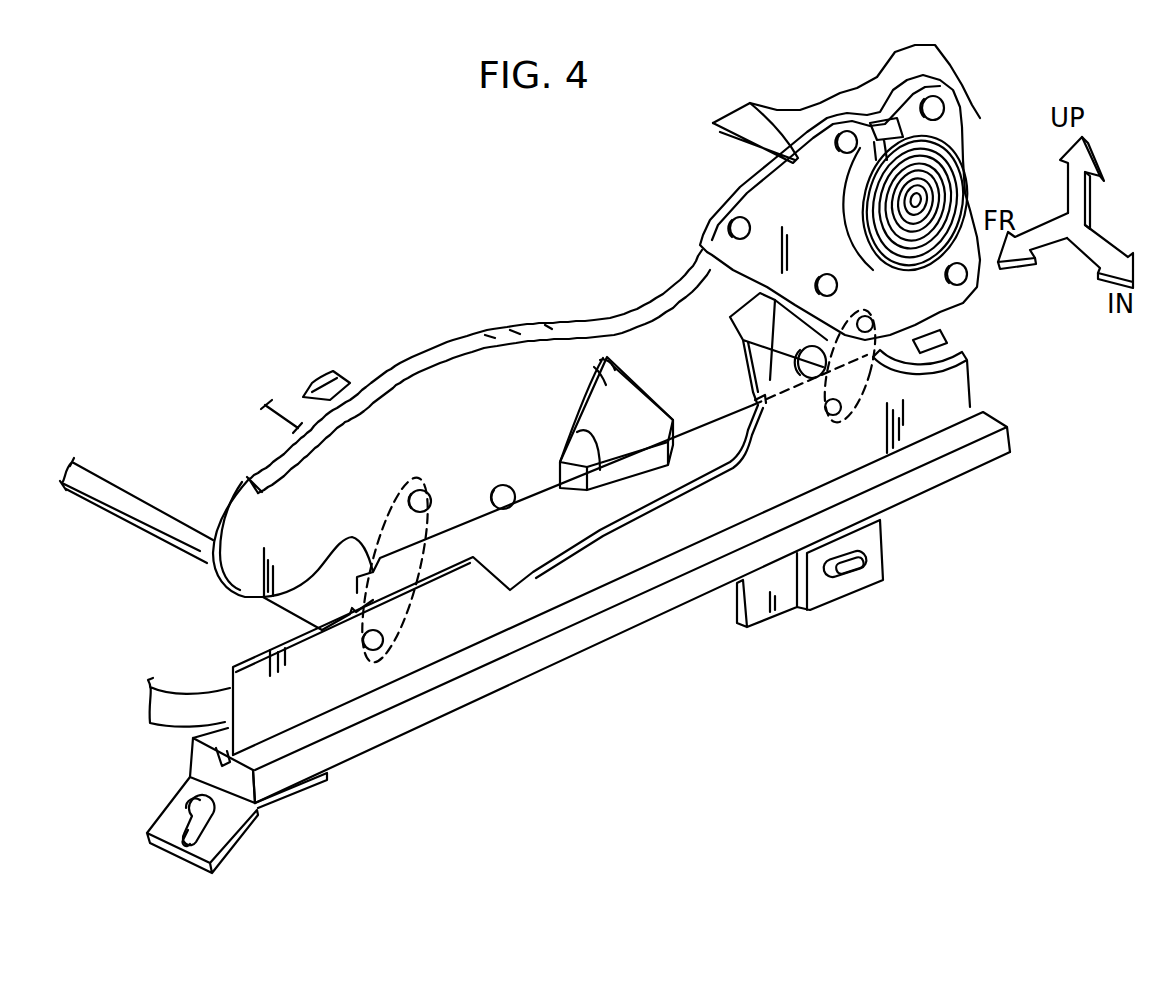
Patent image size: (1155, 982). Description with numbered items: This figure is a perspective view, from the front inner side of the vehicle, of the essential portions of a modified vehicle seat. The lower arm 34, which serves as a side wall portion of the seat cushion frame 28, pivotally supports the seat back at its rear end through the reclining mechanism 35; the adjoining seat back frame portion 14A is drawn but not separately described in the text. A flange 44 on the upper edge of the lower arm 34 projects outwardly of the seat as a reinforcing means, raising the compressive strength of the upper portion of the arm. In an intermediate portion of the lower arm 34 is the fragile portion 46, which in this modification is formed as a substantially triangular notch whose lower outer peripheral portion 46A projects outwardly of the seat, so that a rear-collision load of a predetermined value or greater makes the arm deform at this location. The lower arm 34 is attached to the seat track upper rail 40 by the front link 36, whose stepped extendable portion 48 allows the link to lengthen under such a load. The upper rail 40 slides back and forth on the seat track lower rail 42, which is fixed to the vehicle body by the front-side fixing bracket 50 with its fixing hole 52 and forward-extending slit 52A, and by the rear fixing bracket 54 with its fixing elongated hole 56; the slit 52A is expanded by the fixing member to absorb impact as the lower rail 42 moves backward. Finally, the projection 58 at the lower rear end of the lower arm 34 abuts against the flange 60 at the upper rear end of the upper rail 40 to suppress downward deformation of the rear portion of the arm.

The bracket 14A is at (977, 114).
The seat cushion frame 28 is at (540, 286).
The lower arm 34 is at (209, 560).
The reclining mechanism 35 is at (968, 180).
The front link 36 is at (345, 598).
The seat track upper rail 40 is at (950, 468).
The seat track lower rail 42 is at (537, 660).
The flange 44 is at (400, 370).
The fragile portion 46 is at (607, 355).
The lower outer peripheral portion 46A is at (576, 432).
The extendable portion 48 is at (380, 560).
The front-side fixing bracket 50 is at (258, 812).
The fixing hole 52 is at (190, 776).
The slit 52A is at (184, 816).
The rear fixing bracket 54 is at (820, 610).
The fixing elongated hole 56 is at (847, 565).
The projection 58 is at (945, 340).
The flange 60 is at (965, 360).